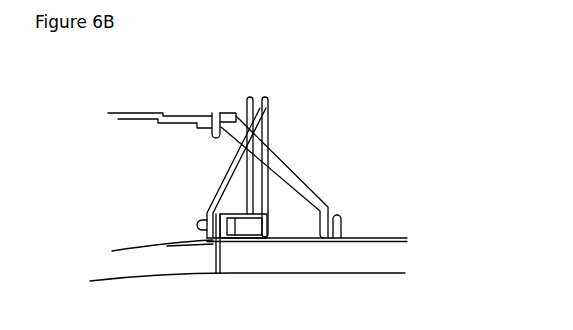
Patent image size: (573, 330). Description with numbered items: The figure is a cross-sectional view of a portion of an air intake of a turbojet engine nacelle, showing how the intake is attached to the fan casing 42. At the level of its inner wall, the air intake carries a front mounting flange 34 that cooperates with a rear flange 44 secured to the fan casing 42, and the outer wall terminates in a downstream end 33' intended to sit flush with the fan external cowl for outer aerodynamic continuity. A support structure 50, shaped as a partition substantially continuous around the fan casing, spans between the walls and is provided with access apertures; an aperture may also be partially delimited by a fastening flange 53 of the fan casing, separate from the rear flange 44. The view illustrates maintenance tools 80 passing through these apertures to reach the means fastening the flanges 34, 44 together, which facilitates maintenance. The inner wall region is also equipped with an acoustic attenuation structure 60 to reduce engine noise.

The downstream end 33' is at (162, 102).
The maintenance tools 80 is at (270, 113).
The support structure 50 is at (313, 192).
The fastening flange 53 is at (341, 219).
The rear flange 44 is at (224, 243).
The front mounting flange 34 is at (216, 276).
The acoustic attenuation structure 60 is at (145, 259).
The casing 42 is at (388, 262).